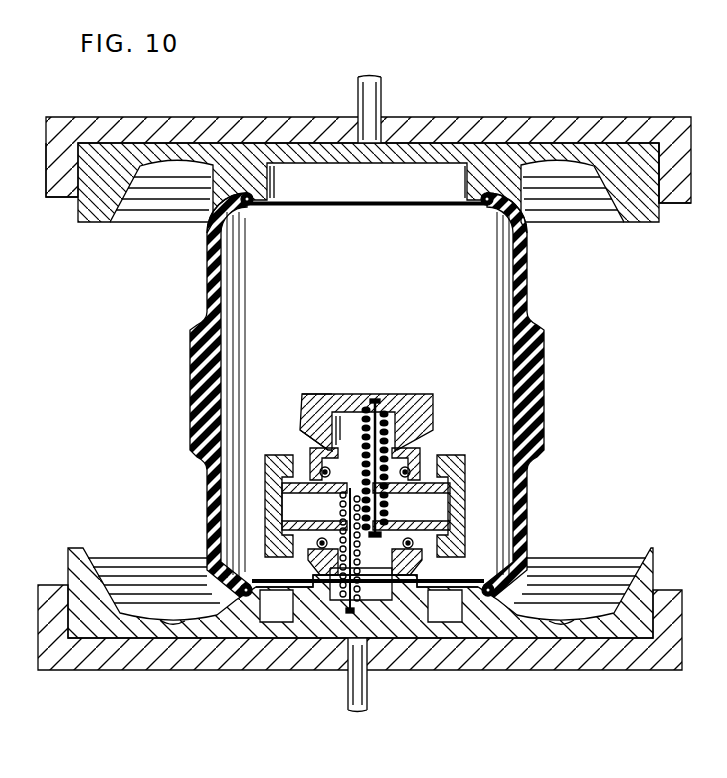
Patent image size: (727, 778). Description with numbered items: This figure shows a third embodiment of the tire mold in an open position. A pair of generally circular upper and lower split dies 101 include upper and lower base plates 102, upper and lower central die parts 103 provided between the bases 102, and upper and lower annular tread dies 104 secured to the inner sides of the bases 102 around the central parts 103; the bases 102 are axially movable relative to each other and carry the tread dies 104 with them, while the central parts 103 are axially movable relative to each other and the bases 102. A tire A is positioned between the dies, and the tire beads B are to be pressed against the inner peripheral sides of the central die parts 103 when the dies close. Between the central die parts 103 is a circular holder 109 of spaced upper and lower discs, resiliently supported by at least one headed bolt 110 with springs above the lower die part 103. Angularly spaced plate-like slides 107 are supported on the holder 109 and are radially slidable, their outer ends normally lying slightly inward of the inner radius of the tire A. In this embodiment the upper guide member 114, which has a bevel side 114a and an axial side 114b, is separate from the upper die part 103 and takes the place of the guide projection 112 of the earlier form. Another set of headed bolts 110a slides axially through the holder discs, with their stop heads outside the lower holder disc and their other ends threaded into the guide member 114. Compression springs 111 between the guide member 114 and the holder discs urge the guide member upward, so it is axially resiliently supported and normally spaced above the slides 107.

The split dies 101 is at (509, 113).
The base plates 102 is at (53, 181).
The central die parts 103 is at (268, 148).
The annular tread dies 104 is at (89, 212).
The tire A is at (188, 366).
The tire beads B is at (249, 206).
The slides 107 is at (460, 506).
The holder 109 is at (462, 527).
The headed bolts 110 is at (352, 510).
The headed bolts 110a is at (412, 401).
The compression springs 111 is at (434, 413).
The guide part 112 is at (414, 592).
The upper guide member 114 is at (323, 393).
The bevel side 114a is at (298, 438).
The axial side 114b is at (303, 392).